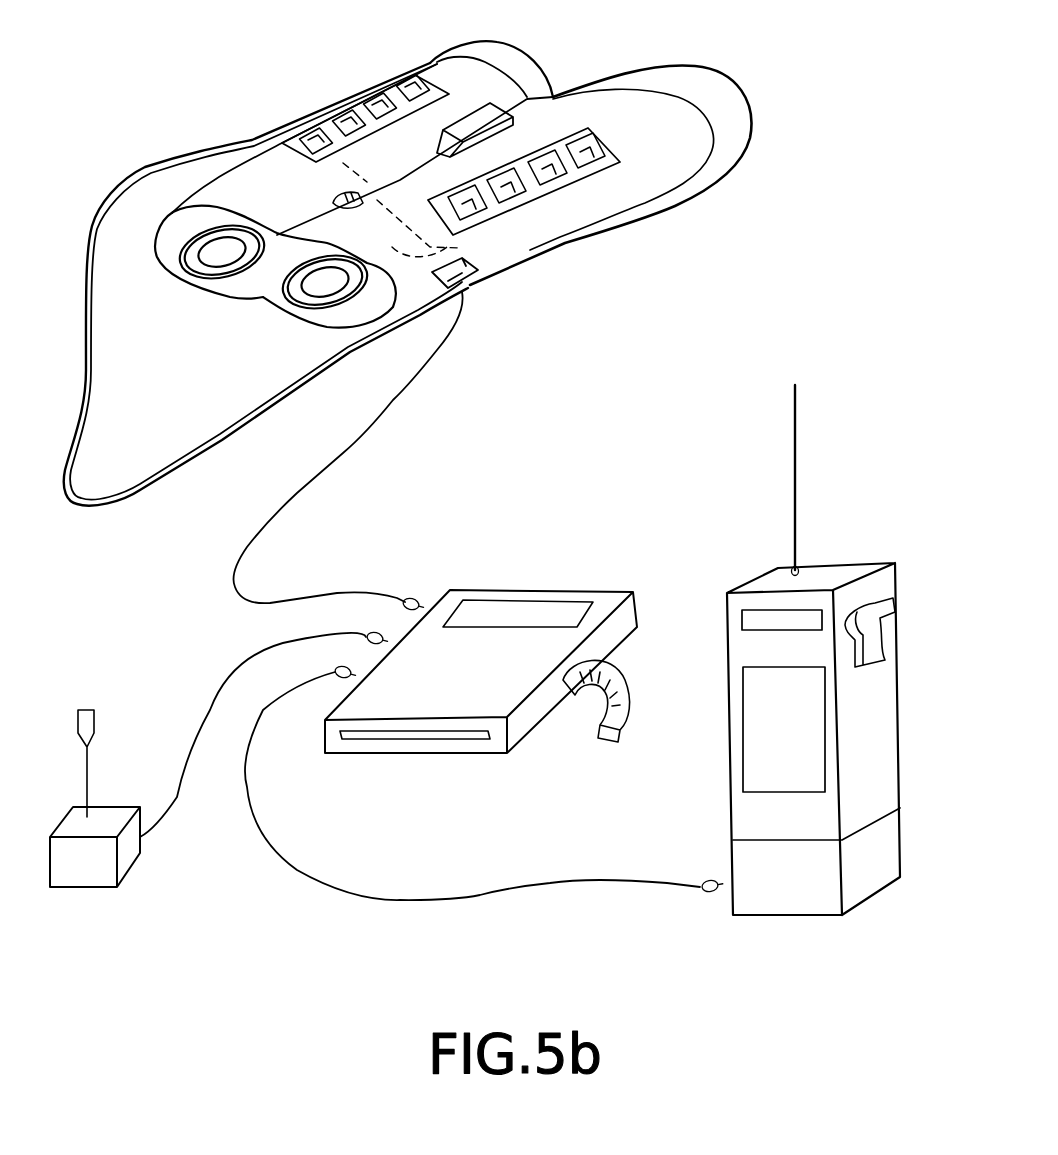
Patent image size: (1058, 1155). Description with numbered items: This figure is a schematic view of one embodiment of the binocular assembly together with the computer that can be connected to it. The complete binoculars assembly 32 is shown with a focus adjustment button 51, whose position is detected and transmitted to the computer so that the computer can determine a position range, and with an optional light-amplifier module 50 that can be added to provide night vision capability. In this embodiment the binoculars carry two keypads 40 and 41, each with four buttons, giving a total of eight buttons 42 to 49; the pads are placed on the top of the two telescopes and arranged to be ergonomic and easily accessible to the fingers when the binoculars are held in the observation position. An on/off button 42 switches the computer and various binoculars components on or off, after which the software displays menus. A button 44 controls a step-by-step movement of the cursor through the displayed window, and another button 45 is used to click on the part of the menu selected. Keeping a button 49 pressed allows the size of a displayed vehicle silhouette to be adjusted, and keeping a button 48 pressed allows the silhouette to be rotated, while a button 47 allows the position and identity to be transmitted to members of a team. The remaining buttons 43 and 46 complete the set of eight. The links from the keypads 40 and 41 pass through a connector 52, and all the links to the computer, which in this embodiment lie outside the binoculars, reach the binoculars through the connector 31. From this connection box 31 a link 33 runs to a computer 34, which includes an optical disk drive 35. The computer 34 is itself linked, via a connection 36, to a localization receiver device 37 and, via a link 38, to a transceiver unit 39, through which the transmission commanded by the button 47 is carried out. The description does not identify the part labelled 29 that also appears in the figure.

The nose piece / bridge 29 is at (463, 113).
The connector 31 is at (475, 260).
The binoculars assembly 32 is at (653, 193).
The link 33 is at (343, 452).
The computer 34 is at (603, 603).
The optical disk drive 35 is at (443, 735).
The connection 36 is at (222, 682).
The localization receiver device 37 is at (127, 848).
The link 38 is at (412, 898).
The transceiver unit 39 is at (748, 822).
The keypad 40 is at (603, 148).
The keypad 41 is at (433, 87).
The on/off button 42 is at (588, 162).
The button 43 is at (550, 162).
The button 44 is at (507, 182).
The button 45 is at (467, 202).
The button 46 is at (376, 103).
The button 47 is at (348, 108).
The button 48 is at (330, 125).
The button 49 is at (303, 137).
The light-amplifier module 50 is at (728, 140).
The focus adjustment button 51 is at (335, 198).
The connector 52 is at (420, 243).